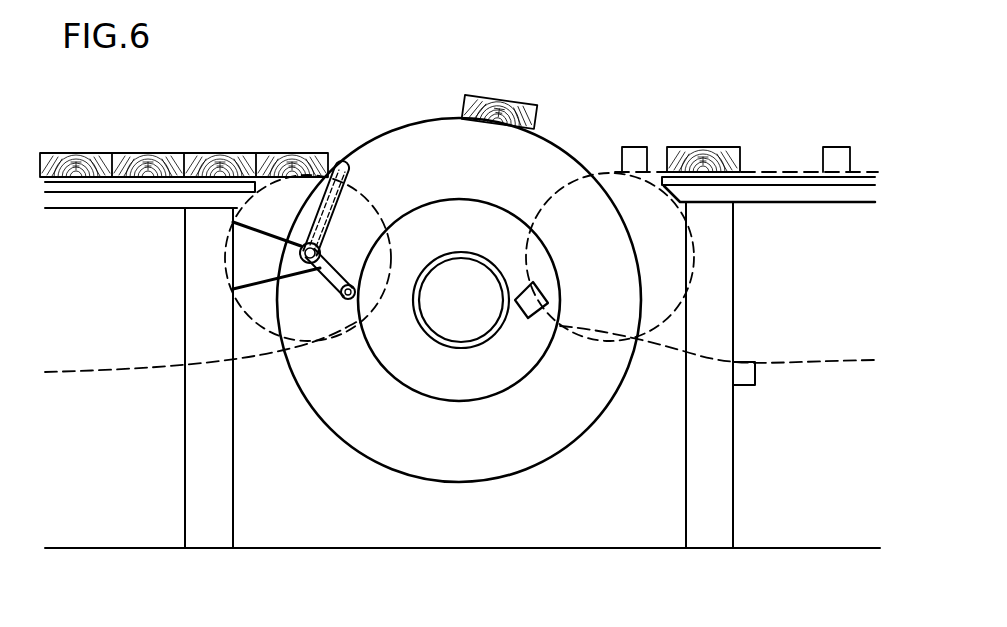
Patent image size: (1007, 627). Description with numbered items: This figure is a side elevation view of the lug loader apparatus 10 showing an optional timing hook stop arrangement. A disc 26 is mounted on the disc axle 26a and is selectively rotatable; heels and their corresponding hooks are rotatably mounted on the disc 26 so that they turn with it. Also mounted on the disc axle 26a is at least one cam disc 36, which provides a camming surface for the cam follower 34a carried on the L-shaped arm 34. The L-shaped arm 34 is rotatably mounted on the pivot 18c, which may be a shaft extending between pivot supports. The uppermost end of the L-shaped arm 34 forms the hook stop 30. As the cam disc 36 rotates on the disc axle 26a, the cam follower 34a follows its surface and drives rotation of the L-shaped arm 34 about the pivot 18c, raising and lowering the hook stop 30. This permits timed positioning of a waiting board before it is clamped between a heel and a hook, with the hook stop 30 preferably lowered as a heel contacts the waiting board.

The lug loader apparatus 10 is at (577, 68).
The pivot 18c is at (300, 256).
The disc 26 is at (345, 442).
The disc axle 26a is at (461, 252).
The hook stop 30 is at (349, 170).
The L-shaped arm 34 is at (325, 275).
The cam follower 34a is at (344, 299).
The cam disc 36 is at (440, 397).